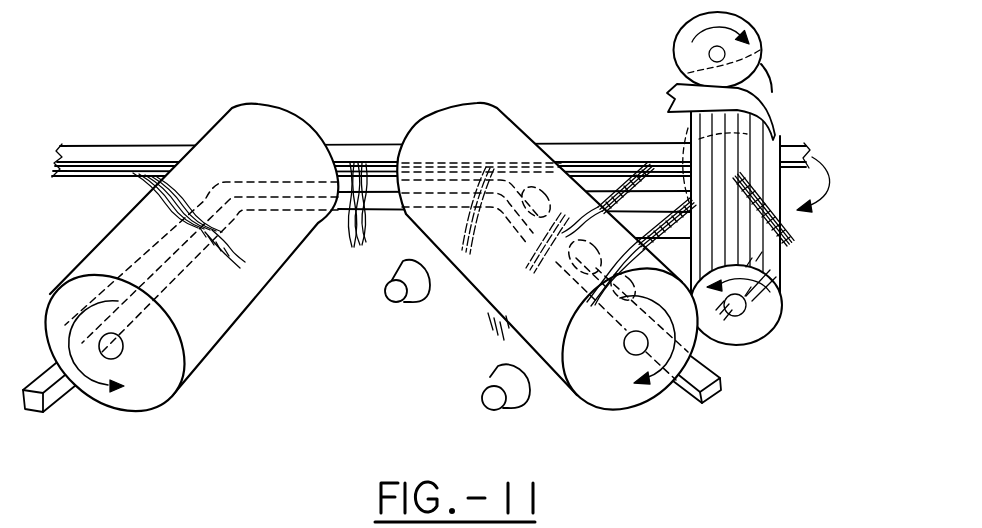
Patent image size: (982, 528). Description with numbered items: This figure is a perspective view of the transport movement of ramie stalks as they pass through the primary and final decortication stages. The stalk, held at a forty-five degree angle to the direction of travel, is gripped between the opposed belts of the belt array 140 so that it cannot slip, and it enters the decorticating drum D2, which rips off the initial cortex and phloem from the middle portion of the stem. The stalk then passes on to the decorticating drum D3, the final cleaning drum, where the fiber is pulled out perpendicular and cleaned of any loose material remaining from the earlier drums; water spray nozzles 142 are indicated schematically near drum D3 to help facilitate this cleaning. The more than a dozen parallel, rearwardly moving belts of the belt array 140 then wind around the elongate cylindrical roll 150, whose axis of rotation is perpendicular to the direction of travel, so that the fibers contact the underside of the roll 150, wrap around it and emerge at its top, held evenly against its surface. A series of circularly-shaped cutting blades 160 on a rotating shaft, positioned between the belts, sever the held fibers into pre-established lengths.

The decorticating drum D2 is at (272, 68).
The decorticating drum D3 is at (464, 103).
The belt array 140 is at (593, 143).
The water spray nozzles 142 is at (413, 303).
The roll 150 is at (783, 313).
The cutting blades 160 is at (752, 23).